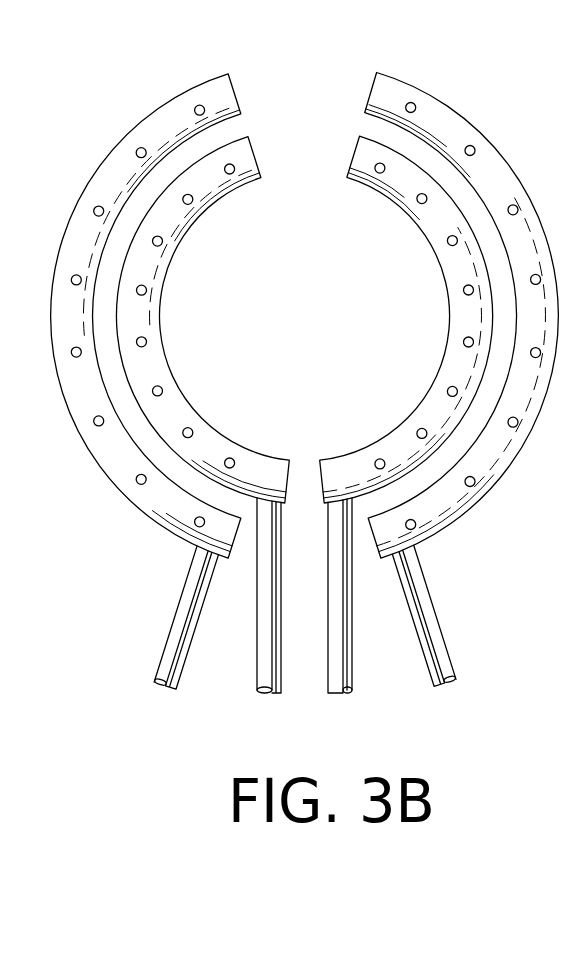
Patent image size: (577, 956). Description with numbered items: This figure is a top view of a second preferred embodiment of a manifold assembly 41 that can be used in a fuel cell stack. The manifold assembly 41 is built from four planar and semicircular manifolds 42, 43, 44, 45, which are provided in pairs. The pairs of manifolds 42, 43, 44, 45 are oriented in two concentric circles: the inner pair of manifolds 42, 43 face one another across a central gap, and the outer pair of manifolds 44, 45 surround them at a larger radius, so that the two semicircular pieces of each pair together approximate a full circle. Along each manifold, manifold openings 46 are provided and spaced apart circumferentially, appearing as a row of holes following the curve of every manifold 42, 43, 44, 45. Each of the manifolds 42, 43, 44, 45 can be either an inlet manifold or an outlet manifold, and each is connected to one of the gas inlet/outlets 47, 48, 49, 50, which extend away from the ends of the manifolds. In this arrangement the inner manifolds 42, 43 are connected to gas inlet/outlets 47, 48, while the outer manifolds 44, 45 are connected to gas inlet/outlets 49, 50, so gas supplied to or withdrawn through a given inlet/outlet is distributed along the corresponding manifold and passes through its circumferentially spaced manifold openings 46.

The manifold assembly 41 is at (146, 574).
The manifold 42 is at (217, 196).
The manifold 43 is at (392, 186).
The manifold 44 is at (222, 86).
The manifold 45 is at (388, 78).
The manifold openings 46 is at (469, 145).
The gas inlet/outlet 47 is at (276, 668).
The gas inlet/outlet 48 is at (347, 670).
The gas inlet/outlet 49 is at (180, 662).
The gas inlet/outlet 50 is at (432, 668).